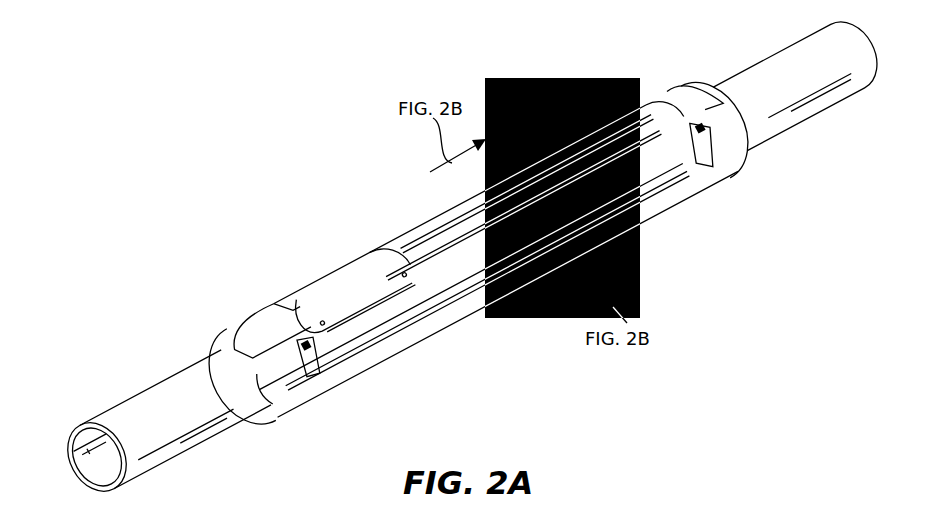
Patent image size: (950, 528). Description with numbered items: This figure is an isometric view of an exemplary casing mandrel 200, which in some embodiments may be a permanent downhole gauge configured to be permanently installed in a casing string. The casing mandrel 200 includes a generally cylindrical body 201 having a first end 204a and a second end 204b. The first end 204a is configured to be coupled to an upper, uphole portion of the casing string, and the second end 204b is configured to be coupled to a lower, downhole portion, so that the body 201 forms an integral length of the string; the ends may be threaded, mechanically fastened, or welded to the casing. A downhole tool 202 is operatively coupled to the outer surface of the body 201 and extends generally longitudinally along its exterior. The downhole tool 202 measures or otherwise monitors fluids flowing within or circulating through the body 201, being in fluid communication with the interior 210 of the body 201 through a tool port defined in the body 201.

The casing mandrel 200 is at (268, 138).
The body 201 is at (210, 372).
The downhole tool 202 is at (448, 242).
The first end 204a is at (76, 404).
The second end 204b is at (876, 104).
The interior 210 is at (104, 465).